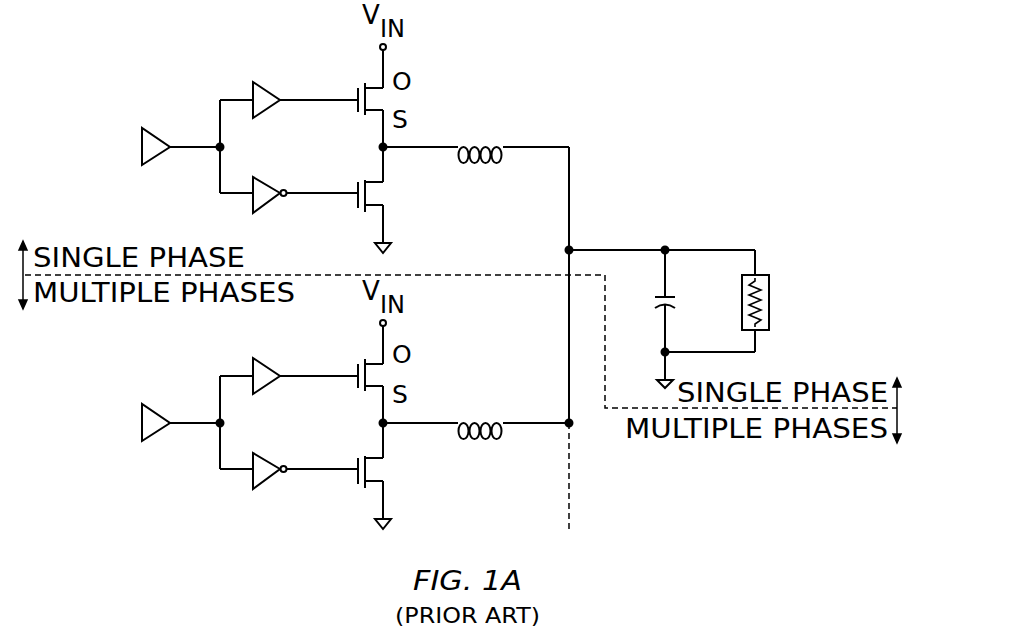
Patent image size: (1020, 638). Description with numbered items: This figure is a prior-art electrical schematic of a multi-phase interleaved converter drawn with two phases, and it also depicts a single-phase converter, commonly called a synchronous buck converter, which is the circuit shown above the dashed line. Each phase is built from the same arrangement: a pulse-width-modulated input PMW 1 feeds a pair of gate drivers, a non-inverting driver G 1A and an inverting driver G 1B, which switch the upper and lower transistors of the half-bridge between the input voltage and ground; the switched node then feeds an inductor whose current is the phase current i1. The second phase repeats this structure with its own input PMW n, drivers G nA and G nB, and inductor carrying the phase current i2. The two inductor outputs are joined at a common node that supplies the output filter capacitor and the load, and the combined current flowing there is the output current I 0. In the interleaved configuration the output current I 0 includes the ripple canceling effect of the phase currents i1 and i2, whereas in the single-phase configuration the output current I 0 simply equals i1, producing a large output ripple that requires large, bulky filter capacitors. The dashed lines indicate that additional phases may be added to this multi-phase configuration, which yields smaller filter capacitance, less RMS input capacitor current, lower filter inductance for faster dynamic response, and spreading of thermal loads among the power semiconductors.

The gate driver buffer G1A 1A is at (289, 88).
The gate driver inverter G1B 1B is at (289, 183).
The gate driver buffer GnA nA is at (289, 363).
The gate driver inverter GnB nB is at (289, 459).
The PWM input buffer PMW1 1 is at (170, 141).
The PWM input buffer PMWn n is at (169, 419).
The phase current i1 is at (504, 132).
The phase current i2 is at (504, 408).
The output current 0 is at (639, 245).